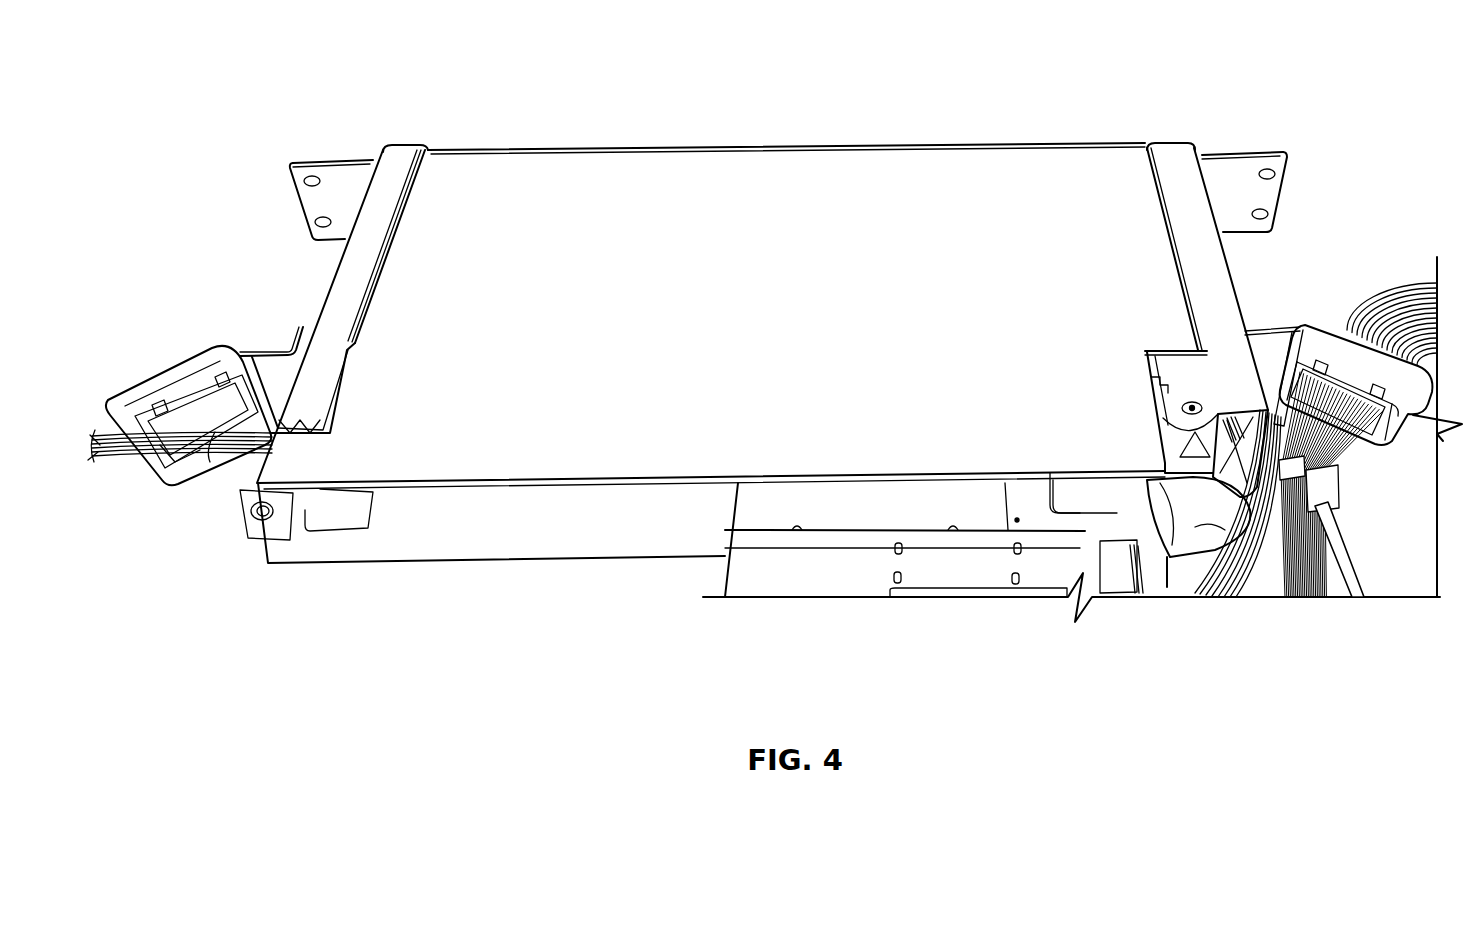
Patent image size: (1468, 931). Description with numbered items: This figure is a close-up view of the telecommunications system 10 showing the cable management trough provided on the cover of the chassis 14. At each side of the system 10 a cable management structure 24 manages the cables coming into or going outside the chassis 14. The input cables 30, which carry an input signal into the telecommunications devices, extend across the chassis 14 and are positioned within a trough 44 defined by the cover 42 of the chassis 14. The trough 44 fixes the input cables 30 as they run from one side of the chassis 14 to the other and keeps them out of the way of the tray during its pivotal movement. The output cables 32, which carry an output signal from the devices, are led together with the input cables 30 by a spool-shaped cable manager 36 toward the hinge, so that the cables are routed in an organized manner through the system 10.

The system 10 is at (408, 88).
The chassis 14 is at (1210, 293).
The cable management structure 24 is at (163, 378).
The input cables 30 is at (222, 445).
The output cables 32 is at (1350, 455).
The cable manager 36 is at (1254, 560).
The cover 42 is at (612, 424).
The trough 44 is at (447, 487).